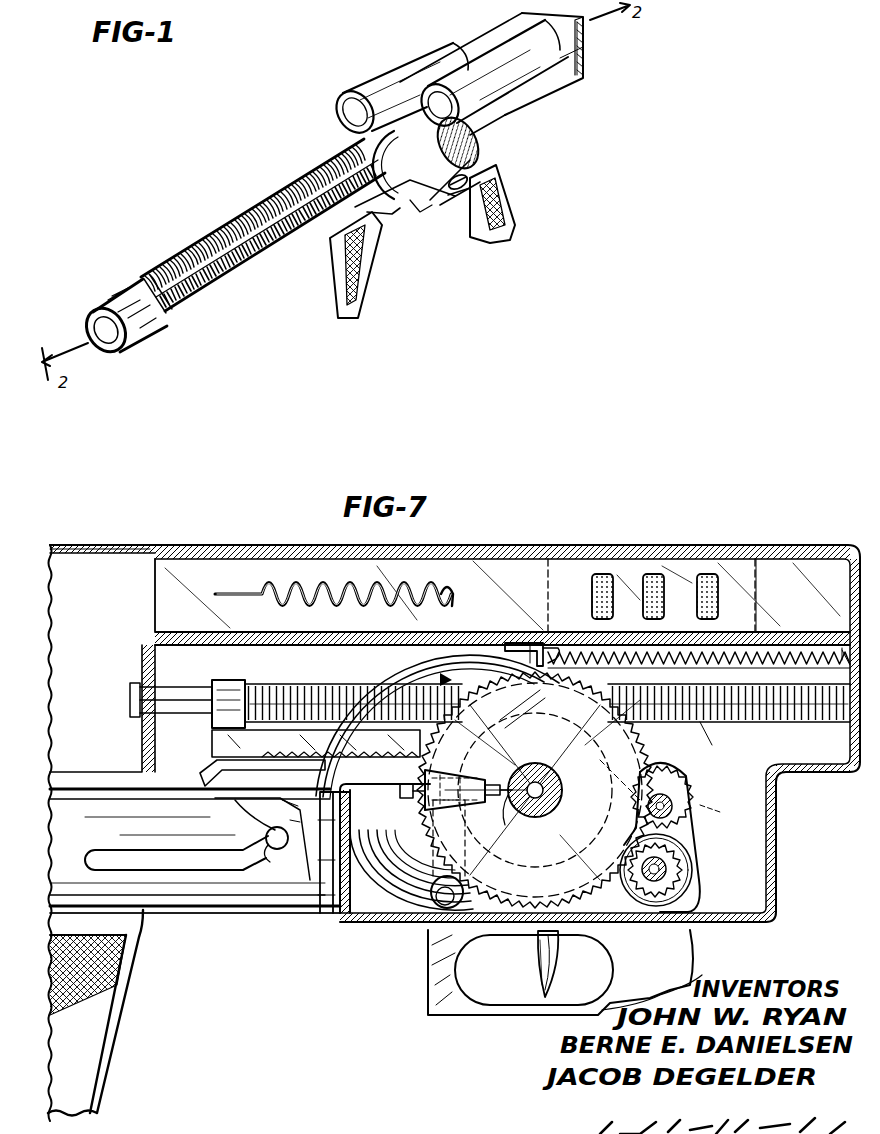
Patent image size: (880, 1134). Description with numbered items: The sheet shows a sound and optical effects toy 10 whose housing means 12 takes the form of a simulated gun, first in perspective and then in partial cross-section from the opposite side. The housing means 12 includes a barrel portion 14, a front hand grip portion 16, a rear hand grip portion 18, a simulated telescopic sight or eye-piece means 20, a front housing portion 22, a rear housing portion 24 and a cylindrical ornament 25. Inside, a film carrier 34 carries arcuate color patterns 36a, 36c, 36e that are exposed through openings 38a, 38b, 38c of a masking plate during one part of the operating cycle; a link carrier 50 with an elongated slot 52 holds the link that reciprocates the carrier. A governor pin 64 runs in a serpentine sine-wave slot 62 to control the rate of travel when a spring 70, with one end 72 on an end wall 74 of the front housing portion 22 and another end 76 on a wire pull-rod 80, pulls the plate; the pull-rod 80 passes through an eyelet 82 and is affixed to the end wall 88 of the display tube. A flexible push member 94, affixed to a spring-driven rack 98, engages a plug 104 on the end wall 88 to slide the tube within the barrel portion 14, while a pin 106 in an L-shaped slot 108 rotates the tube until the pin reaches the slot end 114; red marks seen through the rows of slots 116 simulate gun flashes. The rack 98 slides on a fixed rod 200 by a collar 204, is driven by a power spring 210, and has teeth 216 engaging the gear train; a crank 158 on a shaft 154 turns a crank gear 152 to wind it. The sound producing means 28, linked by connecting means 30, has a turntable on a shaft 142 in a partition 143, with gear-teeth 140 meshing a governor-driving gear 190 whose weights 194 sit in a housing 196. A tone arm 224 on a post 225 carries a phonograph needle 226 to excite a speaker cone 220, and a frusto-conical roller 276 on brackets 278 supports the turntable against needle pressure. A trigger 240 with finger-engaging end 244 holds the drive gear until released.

In FIG. 7, the sound and optical effects toy 10 is at (257, 974).
In FIG. 1, the housing means 12 is at (592, 90).
In FIG. 7, the housing means 12 is at (220, 544).
In FIG. 1, the barrel portion 14 is at (167, 326).
In FIG. 7, the barrel portion 14 is at (225, 910).
In FIG. 1, the front hand grip portion 16 is at (361, 280).
In FIG. 7, the front hand grip portion 16 is at (122, 996).
In FIG. 1, the rear hand grip portion 18 is at (500, 183).
In FIG. 7, the rear hand grip portion 18 is at (690, 972).
In FIG. 1, the simulated telescopic sight or eye-piece means 20 is at (470, 62).
In FIG. 1, the front housing portion 22 is at (400, 210).
In FIG. 7, the front housing portion 22 is at (152, 545).
In FIG. 1, the rear housing portion 24 is at (586, 65).
In FIG. 1, the cylindrical ornament 25 is at (392, 82).
In FIG. 7, the sound producing means 28 is at (388, 940).
In FIG. 7, the connecting means 30 is at (440, 676).
In FIG. 7, the film carrier 34 is at (768, 566).
In FIG. 7, the arcuate color pattern 36a is at (592, 604).
In FIG. 7, the arcuate color pattern 36c is at (664, 604).
In FIG. 7, the arcuate color pattern 36e is at (718, 600).
In FIG. 7, the opening 38a is at (603, 574).
In FIG. 7, the opening 38b is at (653, 574).
In FIG. 7, the opening 38c is at (707, 574).
In FIG. 7, the link carrier 50 is at (520, 643).
In FIG. 7, the elongated slot 52 is at (533, 643).
In FIG. 7, the serpentine-shaped sine-wave slot 62 is at (420, 600).
In FIG. 7, the governor pin 64 is at (458, 578).
In FIG. 7, the spring 70 is at (660, 670).
In FIG. 7, the spring end 72 is at (838, 660).
In FIG. 7, the end wall 74 is at (848, 672).
In FIG. 7, the spring end 76 is at (699, 678).
In FIG. 7, the wire pull-rod 80 is at (507, 690).
In FIG. 7, the eyelet 82 is at (550, 740).
In FIG. 7, the end wall 88 is at (303, 872).
In FIG. 7, the flexible push member 94 is at (215, 781).
In FIG. 7, the spring-driven rack 98 is at (274, 752).
In FIG. 7, the plug or extension 104 is at (260, 808).
In FIG. 7, the pin 106 is at (272, 858).
In FIG. 7, the L-shaped slot 108 is at (178, 868).
In FIG. 7, the slot end 114 is at (95, 845).
In FIG. 1, the slots 116 is at (228, 224).
In FIG. 7, the gear-teeth 140 is at (600, 900).
In FIG. 7, the shaft 142 is at (598, 800).
In FIG. 7, the partition 143 is at (680, 835).
In FIG. 7, the crank gear 152 is at (668, 778).
In FIG. 7, the shaft 154 is at (672, 802).
In FIG. 7, the crank 158 is at (718, 806).
In FIG. 7, the governor-driving gear 190 is at (690, 880).
In FIG. 7, the weights 194 is at (690, 897).
In FIG. 7, the governor housing 196 is at (688, 874).
In FIG. 7, the fixed rod 200 is at (190, 688).
In FIG. 7, the ring or collar 204 is at (243, 683).
In FIG. 7, the rack-driving power spring 210 is at (715, 738).
In FIG. 7, the rack teeth 216 is at (400, 780).
In FIG. 7, the speaker cone 220 is at (353, 922).
In FIG. 7, the tone arm 224 is at (430, 874).
In FIG. 7, the post 225 is at (414, 938).
In FIG. 7, the phonograph needle 226 is at (425, 830).
In FIG. 1, the trigger 240 is at (452, 196).
In FIG. 7, the trigger 240 is at (526, 968).
In FIG. 7, the trigger end 244 is at (540, 980).
In FIG. 7, the frusto-conical roller 276 is at (505, 828).
In FIG. 7, the brackets 278 is at (480, 774).